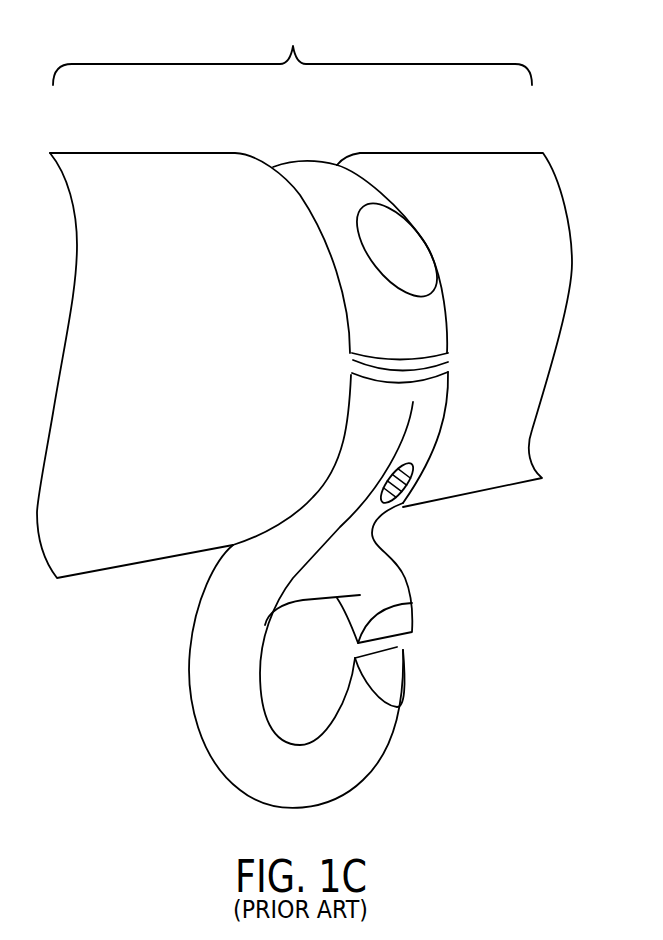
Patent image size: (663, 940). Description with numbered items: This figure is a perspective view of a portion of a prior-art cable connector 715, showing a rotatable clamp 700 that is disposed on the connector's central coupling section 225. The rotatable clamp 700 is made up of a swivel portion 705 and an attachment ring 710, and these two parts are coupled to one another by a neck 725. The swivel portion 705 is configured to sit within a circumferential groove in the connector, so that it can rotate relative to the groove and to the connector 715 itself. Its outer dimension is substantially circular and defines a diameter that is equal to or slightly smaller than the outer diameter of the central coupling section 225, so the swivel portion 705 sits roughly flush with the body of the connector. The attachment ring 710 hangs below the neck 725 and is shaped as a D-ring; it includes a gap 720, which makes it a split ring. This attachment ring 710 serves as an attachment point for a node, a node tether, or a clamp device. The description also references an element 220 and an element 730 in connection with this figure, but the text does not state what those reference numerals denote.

The central coupling section 225 is at (292, 48).
The bar 220 is at (213, 368).
The cable connector 715 is at (120, 153).
The swivel portion 705 is at (308, 173).
The clip upper portion with window 730 is at (347, 200).
The rotatable clamp 700 is at (386, 783).
The neck 725 is at (360, 553).
The gap 720 is at (414, 639).
The attachment ring 710 is at (208, 722).